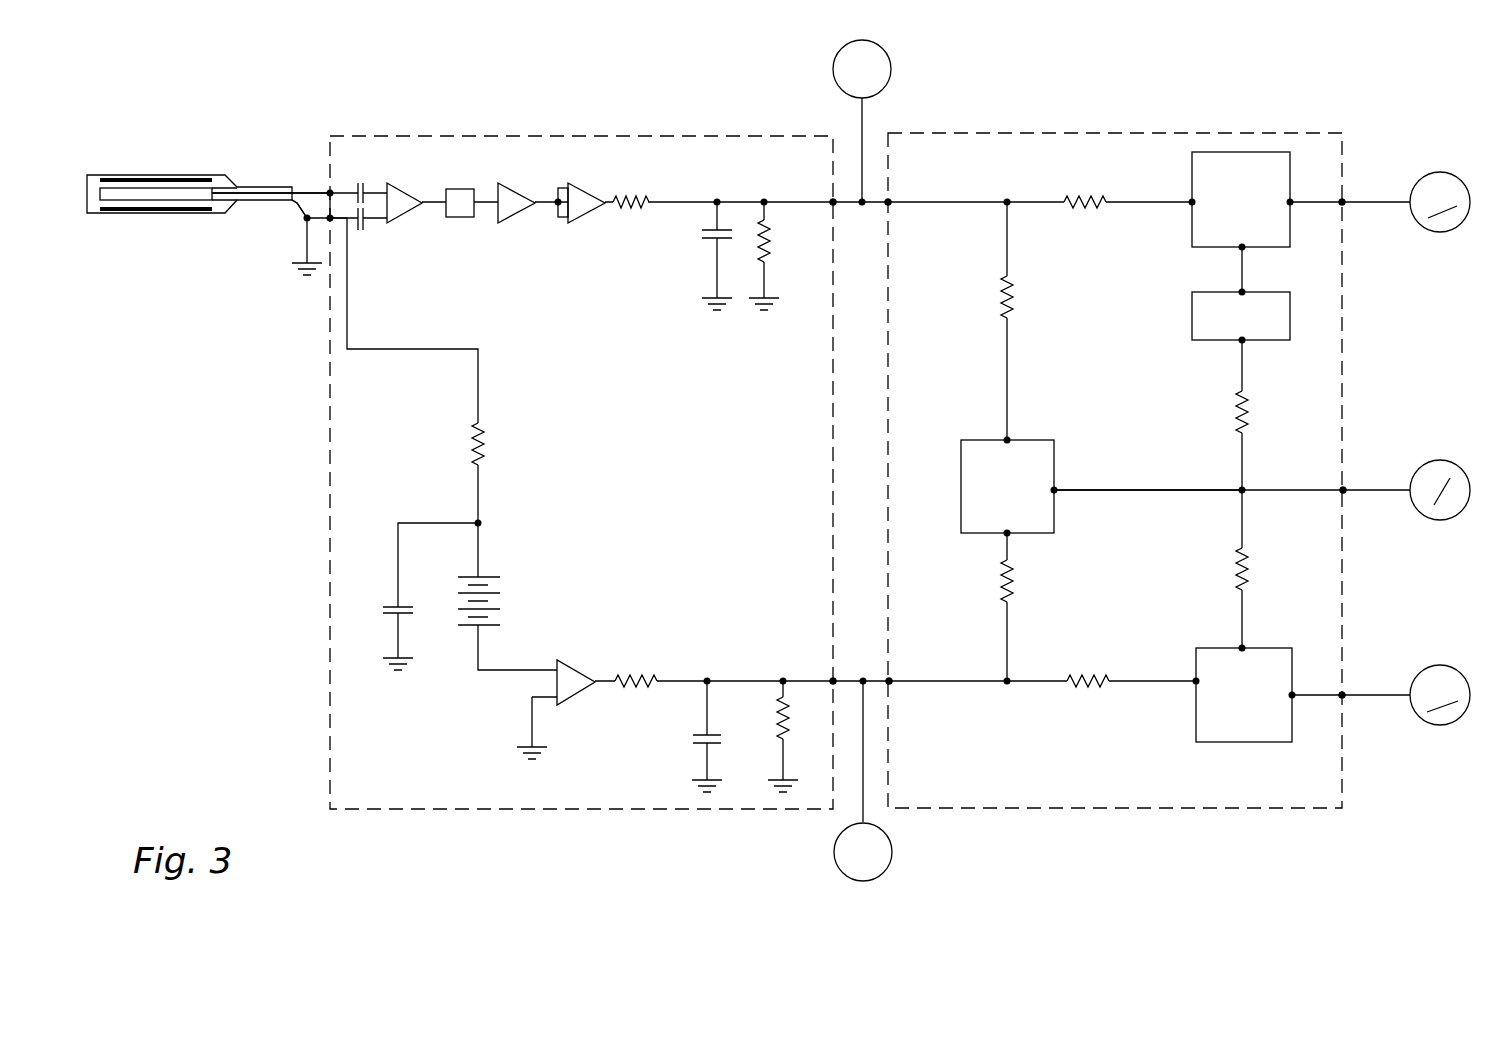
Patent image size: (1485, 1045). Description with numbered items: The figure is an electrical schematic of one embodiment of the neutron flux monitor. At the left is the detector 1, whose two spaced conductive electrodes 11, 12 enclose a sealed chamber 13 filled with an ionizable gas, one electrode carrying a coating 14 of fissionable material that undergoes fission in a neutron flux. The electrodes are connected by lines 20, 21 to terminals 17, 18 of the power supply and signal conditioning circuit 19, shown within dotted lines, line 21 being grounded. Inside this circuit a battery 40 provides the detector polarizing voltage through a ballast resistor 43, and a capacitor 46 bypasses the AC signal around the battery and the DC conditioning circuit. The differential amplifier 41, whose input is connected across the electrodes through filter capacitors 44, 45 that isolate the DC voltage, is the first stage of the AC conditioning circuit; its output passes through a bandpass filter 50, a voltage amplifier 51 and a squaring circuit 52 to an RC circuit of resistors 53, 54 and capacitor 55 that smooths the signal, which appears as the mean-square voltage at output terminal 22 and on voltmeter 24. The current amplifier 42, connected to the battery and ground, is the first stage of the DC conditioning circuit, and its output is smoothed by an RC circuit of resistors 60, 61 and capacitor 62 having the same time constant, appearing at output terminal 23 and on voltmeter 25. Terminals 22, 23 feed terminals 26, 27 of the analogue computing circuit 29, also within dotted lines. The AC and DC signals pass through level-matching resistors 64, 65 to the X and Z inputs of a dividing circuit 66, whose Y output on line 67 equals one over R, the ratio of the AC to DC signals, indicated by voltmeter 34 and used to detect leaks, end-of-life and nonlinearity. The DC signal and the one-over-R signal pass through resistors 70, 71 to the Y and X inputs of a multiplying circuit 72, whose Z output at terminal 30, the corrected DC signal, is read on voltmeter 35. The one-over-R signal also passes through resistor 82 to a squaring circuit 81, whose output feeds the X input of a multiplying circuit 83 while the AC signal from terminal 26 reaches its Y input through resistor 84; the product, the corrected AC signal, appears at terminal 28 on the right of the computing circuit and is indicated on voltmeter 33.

The detector 1 is at (122, 158).
The electrode 11 is at (140, 175).
The electrode 12 is at (212, 186).
The chamber 13 is at (167, 186).
The coating 14 is at (158, 213).
The terminal 17 is at (331, 190).
The terminal 18 is at (334, 222).
The power supply and signal conditioning circuit 19 is at (444, 136).
The line 20 is at (327, 191).
The line 21 is at (296, 206).
The output terminal 22 is at (830, 199).
The output terminal 23 is at (830, 678).
The voltmeter 24 is at (893, 68).
The voltmeter 25 is at (894, 852).
The terminal 26 is at (891, 200).
The terminal 27 is at (892, 678).
The terminal 28 is at (1345, 198).
The computing circuit 29 is at (1000, 133).
The terminal 30 is at (1341, 693).
The voltmeter 33 is at (1433, 172).
The voltmeter 34 is at (1436, 461).
The voltmeter 35 is at (1437, 661).
The battery 40 is at (495, 598).
The differential amplifier 41 is at (402, 187).
The current amplifier 42 is at (572, 697).
The ballast resistor 43 is at (485, 440).
The capacitor 44 is at (364, 188).
The capacitor 45 is at (366, 228).
The capacitor 46 is at (401, 611).
The bandpass filter 50 is at (462, 189).
The voltage amplifier 51 is at (511, 187).
The squaring circuit 52 is at (578, 187).
The resistor 53 is at (632, 210).
The resistor 54 is at (769, 252).
The capacitor 55 is at (712, 240).
The resistor 60 is at (640, 678).
The resistor 61 is at (787, 730).
The capacitor 62 is at (695, 743).
The resistor 64 is at (1013, 298).
The resistor 65 is at (1013, 580).
The dividing circuit 66 is at (960, 476).
The line 67 is at (1118, 488).
The resistor 70 is at (1100, 690).
The resistor 71 is at (1236, 564).
The multiplying circuit 72 is at (1195, 722).
The squaring circuit 81 is at (1191, 320).
The resistor 82 is at (1235, 421).
The multiplying circuit 83 is at (1191, 233).
The resistor 84 is at (1086, 198).